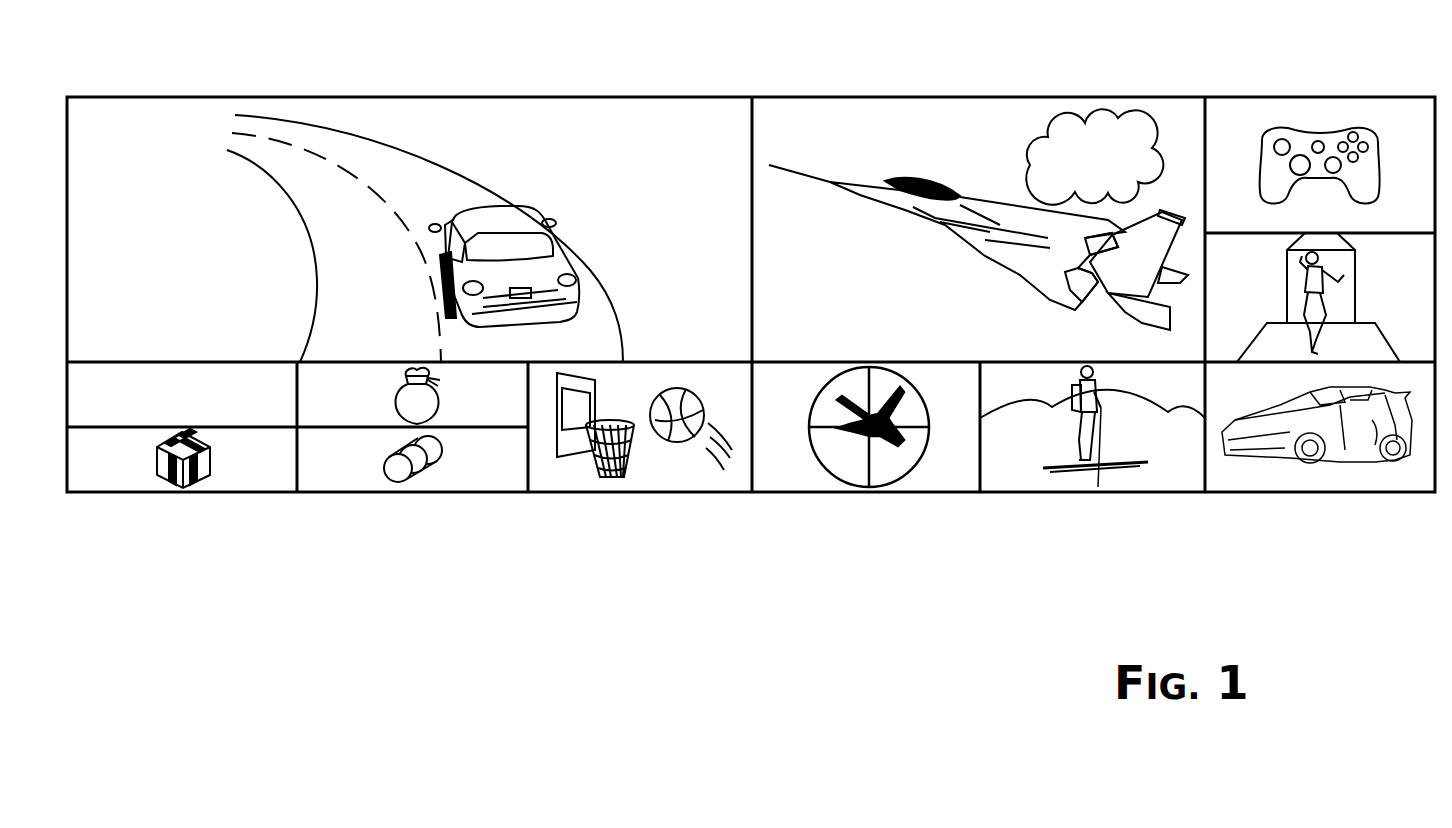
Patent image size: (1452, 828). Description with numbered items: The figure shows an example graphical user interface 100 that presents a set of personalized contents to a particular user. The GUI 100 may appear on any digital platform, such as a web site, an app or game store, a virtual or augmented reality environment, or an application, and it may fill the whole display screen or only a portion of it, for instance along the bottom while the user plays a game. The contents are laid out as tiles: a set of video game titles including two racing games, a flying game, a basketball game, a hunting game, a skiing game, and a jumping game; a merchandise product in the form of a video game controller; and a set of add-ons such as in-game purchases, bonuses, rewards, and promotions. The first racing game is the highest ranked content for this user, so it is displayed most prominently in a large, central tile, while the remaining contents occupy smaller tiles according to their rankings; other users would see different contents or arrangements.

The graphical user interface 100 is at (693, 97).